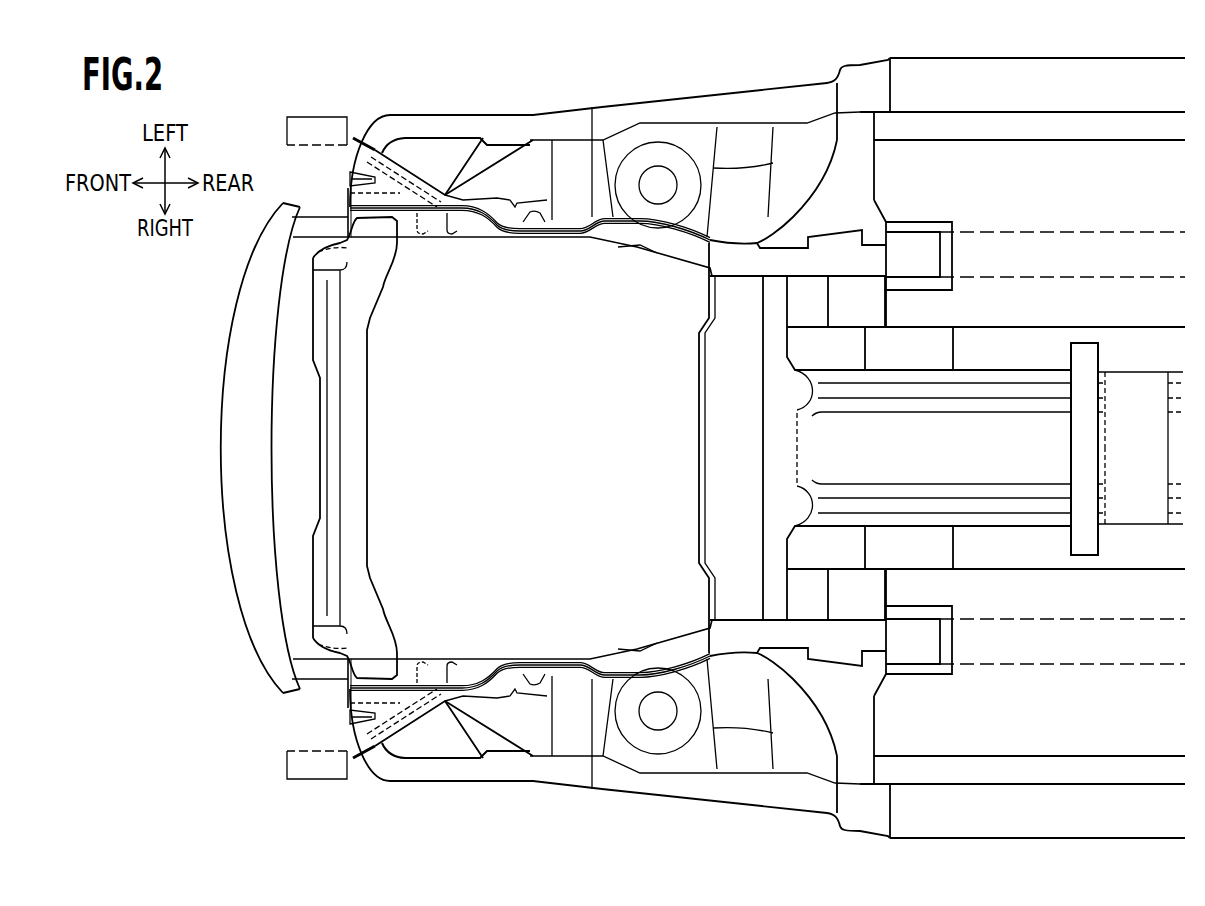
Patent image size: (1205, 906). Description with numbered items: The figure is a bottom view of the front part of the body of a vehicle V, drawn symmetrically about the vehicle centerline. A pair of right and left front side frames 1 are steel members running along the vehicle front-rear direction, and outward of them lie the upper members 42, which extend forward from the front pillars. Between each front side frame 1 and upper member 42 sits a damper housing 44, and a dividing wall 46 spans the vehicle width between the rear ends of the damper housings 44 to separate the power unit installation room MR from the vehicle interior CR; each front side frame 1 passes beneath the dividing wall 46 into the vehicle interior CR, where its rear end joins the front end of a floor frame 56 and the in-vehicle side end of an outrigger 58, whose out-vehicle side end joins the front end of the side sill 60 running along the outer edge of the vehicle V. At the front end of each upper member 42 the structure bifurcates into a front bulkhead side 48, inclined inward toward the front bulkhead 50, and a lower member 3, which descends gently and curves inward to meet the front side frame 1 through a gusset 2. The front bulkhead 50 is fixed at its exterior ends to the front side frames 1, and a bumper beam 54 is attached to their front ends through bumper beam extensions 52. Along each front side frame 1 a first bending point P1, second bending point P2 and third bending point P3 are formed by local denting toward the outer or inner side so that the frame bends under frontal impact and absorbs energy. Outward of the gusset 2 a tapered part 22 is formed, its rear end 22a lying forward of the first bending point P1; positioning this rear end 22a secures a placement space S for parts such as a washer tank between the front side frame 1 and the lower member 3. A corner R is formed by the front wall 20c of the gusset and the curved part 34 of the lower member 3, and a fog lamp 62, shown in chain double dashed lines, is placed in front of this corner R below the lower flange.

The front side frame 1 is at (467, 240).
The gusset 2 is at (416, 224).
The lower member 3 is at (507, 126).
The front wall 20c is at (348, 178).
The tapered part 22 is at (418, 162).
The rear end of the tapered part 22a is at (436, 170).
The curved part 34 is at (397, 135).
The upper member 42 is at (748, 105).
The damper housing 44 is at (657, 158).
The dividing wall 46 is at (725, 446).
The front bulkhead side 48 is at (463, 160).
The front bulkhead 50 is at (357, 443).
The bumper beam extension 52 is at (323, 222).
The bumper beam 54 is at (233, 440).
The floor frame 56 is at (1048, 258).
The outrigger 58 is at (845, 177).
The side sill 60 is at (1090, 90).
The fog lamp 62 is at (300, 112).
The corner R is at (368, 132).
The placement space S is at (527, 173).
The vehicle V is at (213, 334).
The first bending point P1 is at (537, 237).
The second bending point P2 is at (633, 250).
The third bending point P3 is at (736, 240).
The power unit installation room MR is at (534, 434).
The vehicle interior CR is at (974, 448).